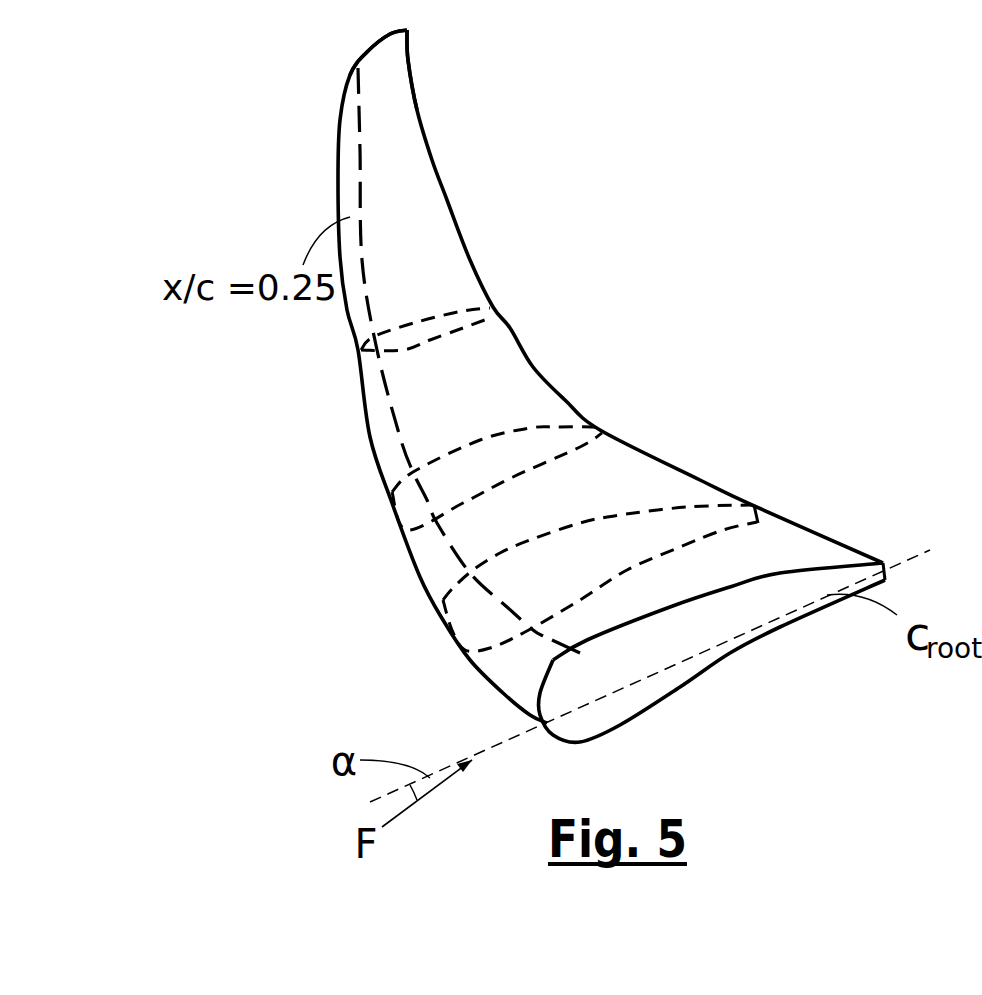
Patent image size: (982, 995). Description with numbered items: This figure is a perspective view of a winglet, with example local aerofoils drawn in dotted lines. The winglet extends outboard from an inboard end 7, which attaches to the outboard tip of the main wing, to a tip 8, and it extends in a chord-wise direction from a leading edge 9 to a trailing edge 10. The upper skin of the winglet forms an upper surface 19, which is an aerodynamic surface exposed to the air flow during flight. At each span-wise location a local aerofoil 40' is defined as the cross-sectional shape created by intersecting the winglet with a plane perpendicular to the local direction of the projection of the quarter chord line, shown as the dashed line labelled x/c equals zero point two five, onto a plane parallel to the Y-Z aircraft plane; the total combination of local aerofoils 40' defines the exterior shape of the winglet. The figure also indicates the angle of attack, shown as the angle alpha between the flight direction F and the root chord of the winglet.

The inboard end 7 is at (727, 637).
The tip 8 is at (367, 52).
The leading edge 9 is at (370, 437).
The trailing edge 10 is at (520, 337).
The upper surface 19 is at (520, 393).
The local aerofoil 40' is at (502, 504).